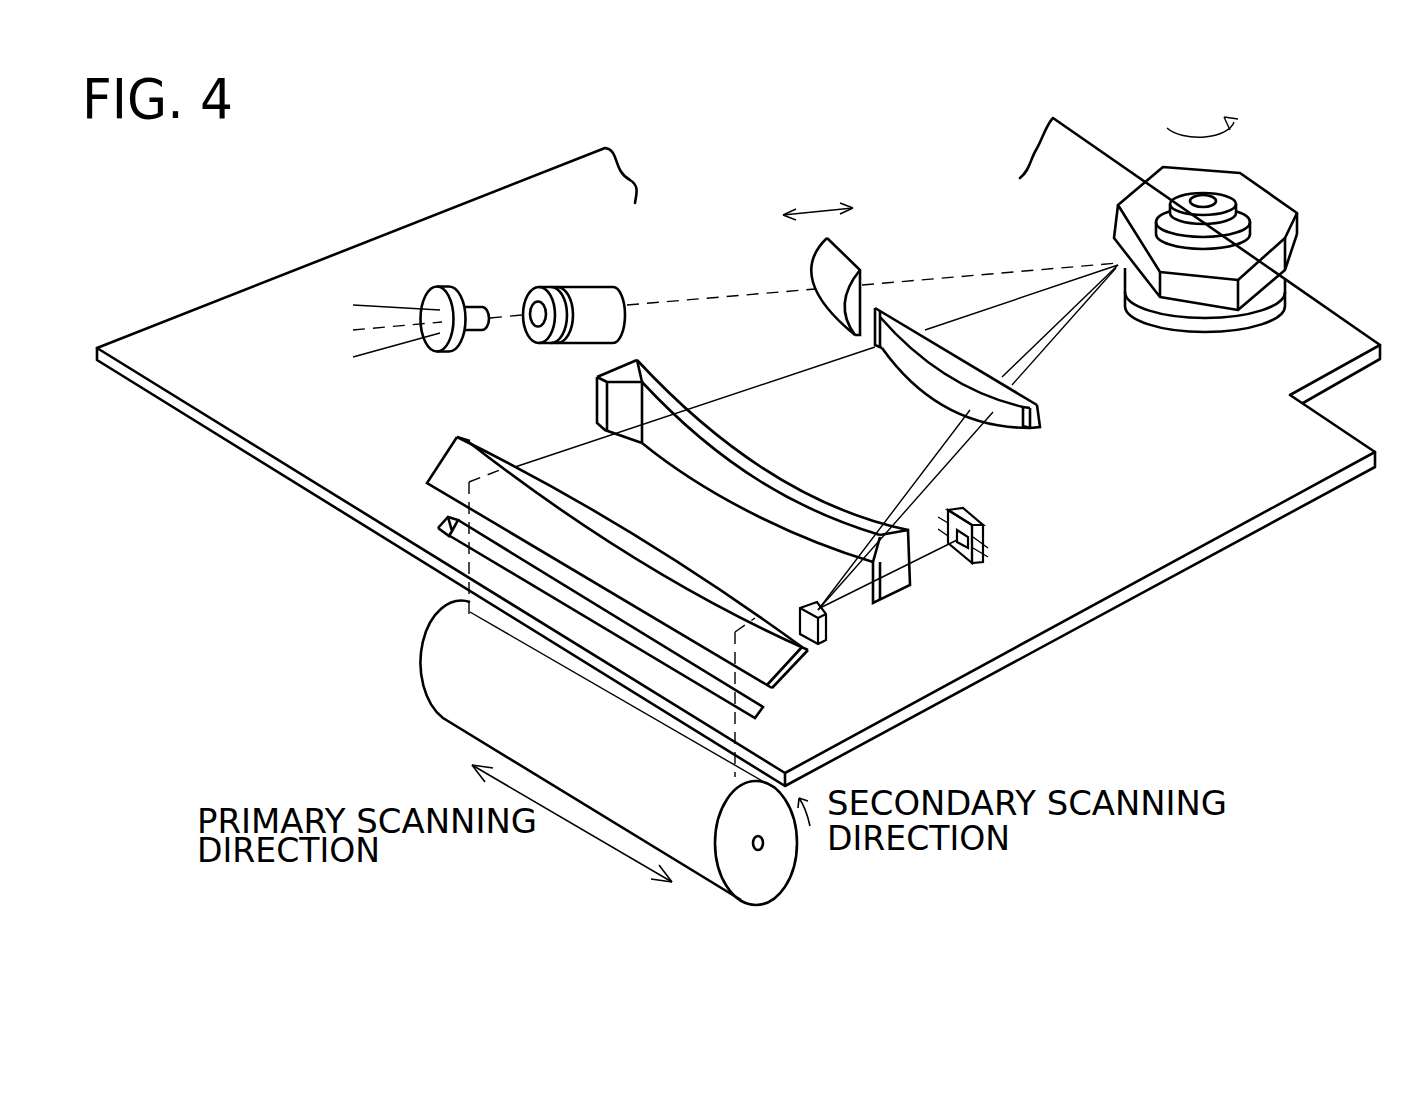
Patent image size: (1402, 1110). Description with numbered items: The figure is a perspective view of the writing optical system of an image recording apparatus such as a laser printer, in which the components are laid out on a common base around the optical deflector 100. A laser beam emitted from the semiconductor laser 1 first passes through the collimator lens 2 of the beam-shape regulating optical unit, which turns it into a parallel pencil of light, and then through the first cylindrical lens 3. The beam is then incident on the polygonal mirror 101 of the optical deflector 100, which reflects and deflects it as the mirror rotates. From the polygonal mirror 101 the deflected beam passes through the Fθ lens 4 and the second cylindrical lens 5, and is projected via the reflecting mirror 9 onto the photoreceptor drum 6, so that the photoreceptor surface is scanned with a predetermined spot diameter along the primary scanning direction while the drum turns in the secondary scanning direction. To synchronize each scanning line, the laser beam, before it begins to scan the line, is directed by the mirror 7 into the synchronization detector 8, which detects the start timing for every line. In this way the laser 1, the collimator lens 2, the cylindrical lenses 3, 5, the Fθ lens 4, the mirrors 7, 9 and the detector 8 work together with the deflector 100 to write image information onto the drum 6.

The semiconductor laser 1 is at (439, 305).
The collimator lens 2 is at (592, 297).
The first cylindrical lens 3 is at (850, 262).
The Fθ lens 4 is at (901, 377).
The second cylindrical lens 5 is at (779, 472).
The photoreceptor drum 6 is at (418, 642).
The mirror 7 is at (827, 630).
The synchronization detector 8 is at (962, 565).
The reflecting mirror 9 is at (796, 662).
The optical deflector 100 is at (1285, 172).
The polygonal mirror 101 is at (1155, 183).